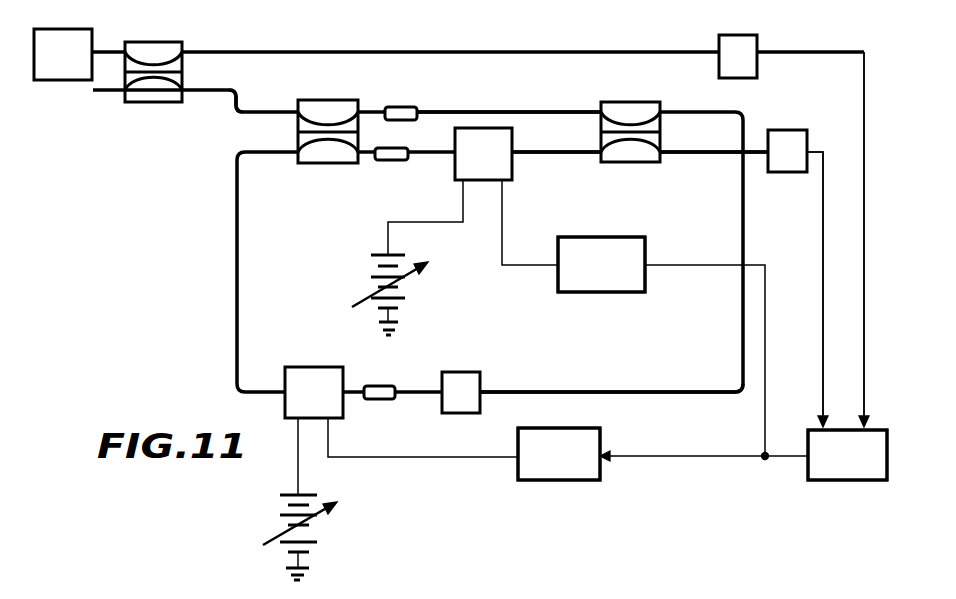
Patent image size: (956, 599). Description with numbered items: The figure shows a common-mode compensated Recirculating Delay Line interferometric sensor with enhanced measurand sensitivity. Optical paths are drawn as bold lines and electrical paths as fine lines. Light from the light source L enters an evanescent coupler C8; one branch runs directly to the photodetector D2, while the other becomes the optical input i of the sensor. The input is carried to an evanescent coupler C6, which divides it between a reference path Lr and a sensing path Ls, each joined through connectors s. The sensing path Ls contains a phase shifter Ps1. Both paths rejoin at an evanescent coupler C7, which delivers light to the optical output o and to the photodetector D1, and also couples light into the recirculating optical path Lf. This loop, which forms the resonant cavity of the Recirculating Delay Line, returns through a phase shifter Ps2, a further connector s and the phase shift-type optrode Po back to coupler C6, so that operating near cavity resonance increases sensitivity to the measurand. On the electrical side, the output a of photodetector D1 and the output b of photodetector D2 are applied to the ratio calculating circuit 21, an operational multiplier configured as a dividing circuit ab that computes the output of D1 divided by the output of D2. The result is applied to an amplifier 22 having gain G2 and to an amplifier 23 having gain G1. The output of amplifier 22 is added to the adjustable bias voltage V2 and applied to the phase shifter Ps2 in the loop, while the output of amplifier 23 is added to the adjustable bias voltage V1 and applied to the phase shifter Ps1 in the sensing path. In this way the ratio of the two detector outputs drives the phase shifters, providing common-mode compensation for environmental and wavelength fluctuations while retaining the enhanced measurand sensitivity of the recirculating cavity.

The light source L is at (63, 54).
The evanescent coupler C8 is at (153, 40).
The optical input i is at (257, 110).
The evanescent coupler C6 is at (327, 99).
The connector s is at (397, 104).
The phase shifter Ps1 is at (483, 154).
The reference path Lr is at (550, 110).
The sensing path Ls is at (555, 156).
The evanescent coupler C7 is at (628, 102).
The photodetector D2 is at (738, 56).
The photodetector D1 is at (787, 151).
The optical output o is at (753, 149).
The adjustable bias voltage signal V1 is at (365, 286).
The gain G1 is at (601, 264).
The amplifier 23 is at (602, 292).
The optical path Lf is at (615, 390).
The phase shifter Ps2 is at (314, 392).
The optrode Po is at (461, 392).
The gain G2 is at (559, 454).
The amplifier 22 is at (560, 482).
The ratio calculating circuit ab is at (847, 455).
The ratio calculating circuit 21 is at (847, 482).
The output of photodetector D1 a is at (818, 400).
The output of photodetector D2 b is at (871, 238).
The adjustable bias voltage signal V2 is at (274, 524).